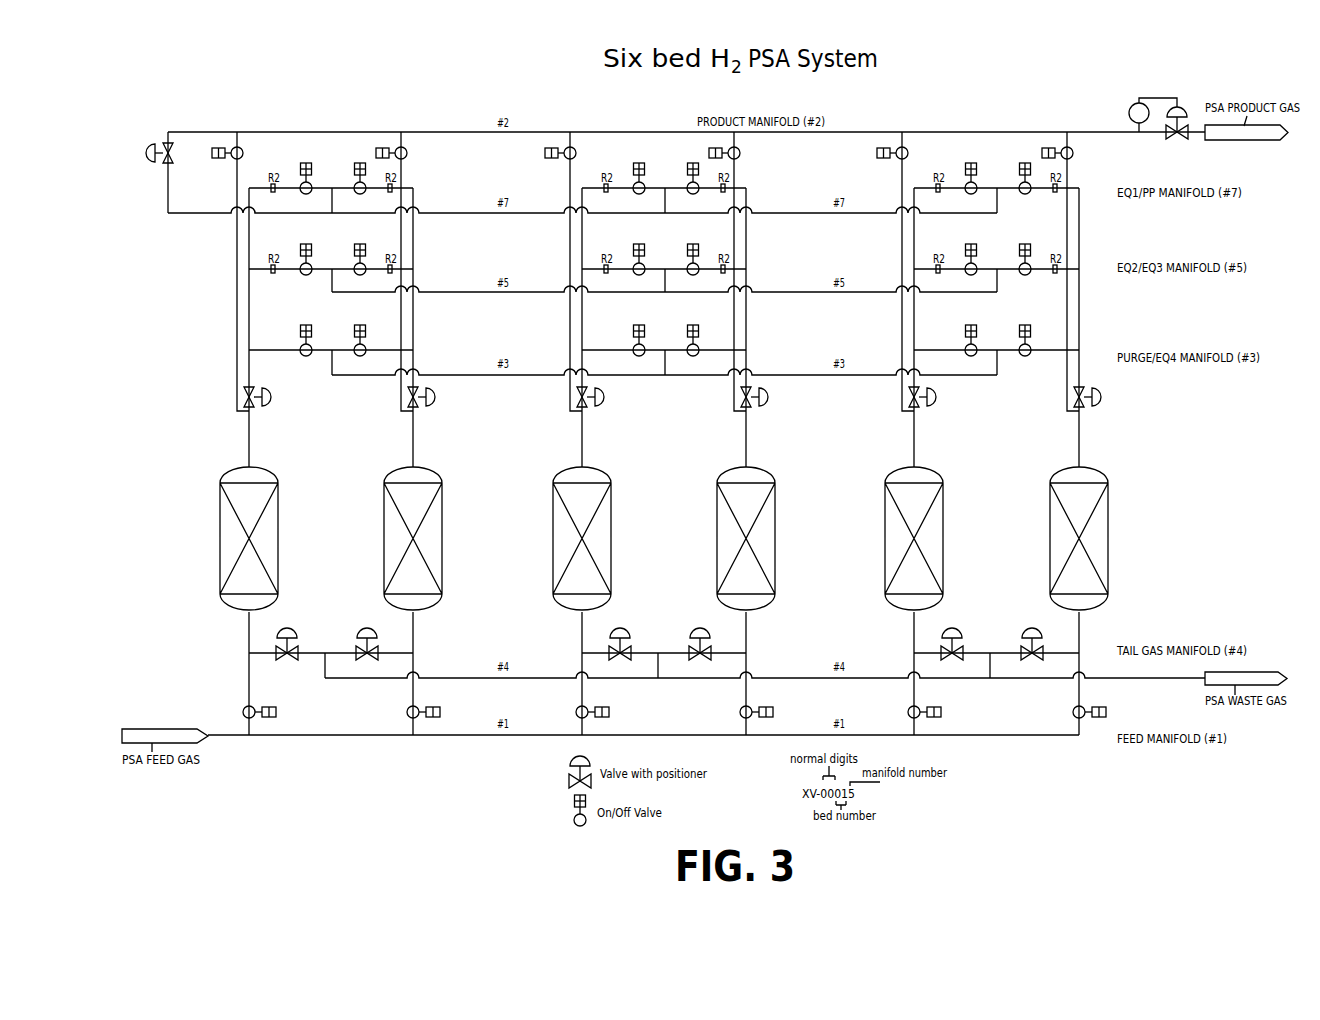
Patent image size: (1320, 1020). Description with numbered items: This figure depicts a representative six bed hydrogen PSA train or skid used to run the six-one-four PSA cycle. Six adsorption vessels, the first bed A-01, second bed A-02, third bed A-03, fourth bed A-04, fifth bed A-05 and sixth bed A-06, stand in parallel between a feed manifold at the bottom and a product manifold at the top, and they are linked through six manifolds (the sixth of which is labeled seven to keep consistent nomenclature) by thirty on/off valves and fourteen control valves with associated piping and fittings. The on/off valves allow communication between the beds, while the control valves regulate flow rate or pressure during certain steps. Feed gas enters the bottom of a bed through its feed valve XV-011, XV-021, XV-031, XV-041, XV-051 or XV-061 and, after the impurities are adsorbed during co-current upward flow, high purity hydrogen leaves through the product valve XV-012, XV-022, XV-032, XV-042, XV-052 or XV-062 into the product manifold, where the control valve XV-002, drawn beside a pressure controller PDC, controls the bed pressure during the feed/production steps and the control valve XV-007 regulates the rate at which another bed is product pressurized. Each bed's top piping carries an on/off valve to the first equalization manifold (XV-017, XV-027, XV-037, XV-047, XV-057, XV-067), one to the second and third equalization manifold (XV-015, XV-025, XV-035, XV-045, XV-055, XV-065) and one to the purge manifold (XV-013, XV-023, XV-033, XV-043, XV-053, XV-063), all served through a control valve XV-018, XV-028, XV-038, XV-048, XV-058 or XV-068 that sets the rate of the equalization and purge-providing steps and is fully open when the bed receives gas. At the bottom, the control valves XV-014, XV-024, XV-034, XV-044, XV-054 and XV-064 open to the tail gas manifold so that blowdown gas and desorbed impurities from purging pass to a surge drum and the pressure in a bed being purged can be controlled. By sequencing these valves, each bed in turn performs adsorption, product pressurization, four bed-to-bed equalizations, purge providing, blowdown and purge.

The first adsorption bed A-01 is at (265, 538).
The second adsorption bed A-02 is at (429, 538).
The third adsorption bed A-03 is at (598, 538).
The fourth adsorption bed A-04 is at (762, 538).
The fifth adsorption bed A-05 is at (930, 538).
The sixth adsorption bed A-06 is at (1095, 538).
The pressure differential controller PDC is at (1130, 112).
The control valve XV-002 is at (1180, 135).
The control valve XV-007 is at (136, 153).
The feed valve of Bed 1 XV-011 is at (282, 713).
The product valve of Bed 1 XV-012 is at (250, 153).
The purge manifold valve of Bed 1 XV-013 is at (297, 350).
The blowdown control valve of Bed 1 XV-014 is at (284, 653).
The equalization manifold valve of Bed 1 XV-015 is at (297, 269).
The first equalization manifold valve of Bed 1 XV-017 is at (297, 188).
The control valve of Bed 1 XV-018 is at (281, 397).
The feed valve of Bed 2 XV-021 is at (446, 713).
The product valve of Bed 2 XV-022 is at (414, 153).
The purge manifold valve of Bed 2 XV-023 is at (351, 350).
The blowdown control valve of Bed 2 XV-024 is at (364, 653).
The equalization manifold valve of Bed 2 XV-025 is at (351, 269).
The first equalization manifold valve of Bed 2 XV-027 is at (351, 188).
The control valve of Bed 2 XV-028 is at (445, 397).
The feed valve of Bed 3 XV-031 is at (615, 713).
The product valve of Bed 3 XV-032 is at (583, 153).
The purge manifold valve of Bed 3 XV-033 is at (630, 350).
The blowdown control valve of Bed 3 XV-034 is at (617, 653).
The equalization manifold valve of Bed 3 XV-035 is at (630, 269).
The first equalization manifold valve of Bed 3 XV-037 is at (630, 188).
The control valve of Bed 3 XV-038 is at (614, 397).
The feed valve of Bed 4 XV-041 is at (779, 713).
The product valve of Bed 4 XV-042 is at (747, 153).
The purge manifold valve of Bed 4 XV-043 is at (684, 350).
The blowdown control valve of Bed 4 XV-044 is at (697, 653).
The equalization manifold valve of Bed 4 XV-045 is at (684, 269).
The first equalization manifold valve of Bed 4 XV-047 is at (684, 188).
The control valve of Bed 4 XV-048 is at (778, 397).
The feed valve of Bed 5 XV-051 is at (947, 713).
The product valve of Bed 5 XV-052 is at (915, 153).
The purge manifold valve of Bed 5 XV-053 is at (962, 350).
The blowdown control valve of Bed 5 XV-054 is at (949, 653).
The equalization manifold valve of Bed 5 XV-055 is at (962, 269).
The first equalization manifold valve of Bed 5 XV-057 is at (962, 188).
The control valve of Bed 5 XV-058 is at (946, 397).
The feed valve of Bed 6 XV-061 is at (1112, 713).
The product valve of Bed 6 XV-062 is at (1080, 153).
The purge manifold valve of Bed 6 XV-063 is at (1016, 350).
The blowdown control valve of Bed 6 XV-064 is at (1029, 653).
The equalization manifold valve of Bed 6 XV-065 is at (1016, 269).
The first equalization manifold valve of Bed 6 XV-067 is at (1016, 188).
The control valve of Bed 6 XV-068 is at (1111, 397).